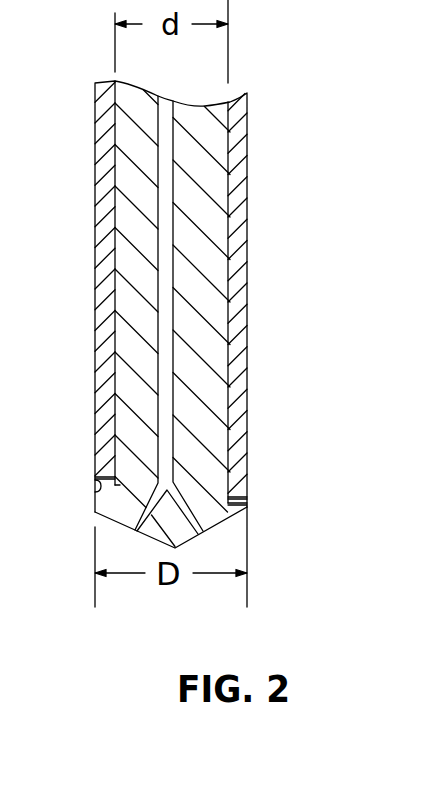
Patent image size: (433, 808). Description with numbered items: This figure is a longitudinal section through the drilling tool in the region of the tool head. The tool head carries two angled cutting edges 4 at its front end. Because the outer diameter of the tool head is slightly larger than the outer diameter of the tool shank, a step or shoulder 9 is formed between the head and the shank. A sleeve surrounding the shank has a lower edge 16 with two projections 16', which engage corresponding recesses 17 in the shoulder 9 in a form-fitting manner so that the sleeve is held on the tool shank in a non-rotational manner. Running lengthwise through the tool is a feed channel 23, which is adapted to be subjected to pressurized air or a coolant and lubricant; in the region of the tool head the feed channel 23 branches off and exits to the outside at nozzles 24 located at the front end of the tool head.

The feed channel 23 is at (170, 189).
The cutting edge 4 is at (217, 525).
The nozzle 24 is at (140, 518).
The lower edge 16 is at (60, 458).
The shoulder 9 is at (95, 497).
The projection 16' is at (284, 481).
The recess 17 is at (243, 511).